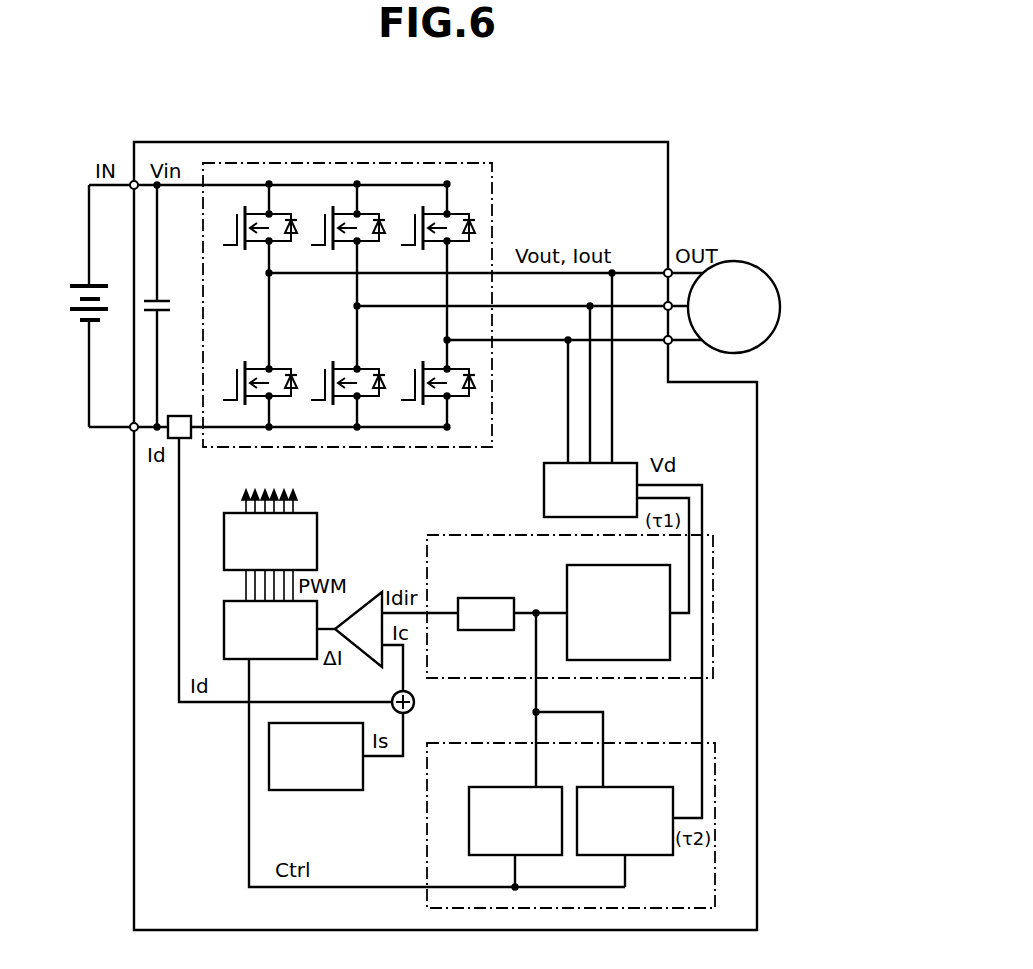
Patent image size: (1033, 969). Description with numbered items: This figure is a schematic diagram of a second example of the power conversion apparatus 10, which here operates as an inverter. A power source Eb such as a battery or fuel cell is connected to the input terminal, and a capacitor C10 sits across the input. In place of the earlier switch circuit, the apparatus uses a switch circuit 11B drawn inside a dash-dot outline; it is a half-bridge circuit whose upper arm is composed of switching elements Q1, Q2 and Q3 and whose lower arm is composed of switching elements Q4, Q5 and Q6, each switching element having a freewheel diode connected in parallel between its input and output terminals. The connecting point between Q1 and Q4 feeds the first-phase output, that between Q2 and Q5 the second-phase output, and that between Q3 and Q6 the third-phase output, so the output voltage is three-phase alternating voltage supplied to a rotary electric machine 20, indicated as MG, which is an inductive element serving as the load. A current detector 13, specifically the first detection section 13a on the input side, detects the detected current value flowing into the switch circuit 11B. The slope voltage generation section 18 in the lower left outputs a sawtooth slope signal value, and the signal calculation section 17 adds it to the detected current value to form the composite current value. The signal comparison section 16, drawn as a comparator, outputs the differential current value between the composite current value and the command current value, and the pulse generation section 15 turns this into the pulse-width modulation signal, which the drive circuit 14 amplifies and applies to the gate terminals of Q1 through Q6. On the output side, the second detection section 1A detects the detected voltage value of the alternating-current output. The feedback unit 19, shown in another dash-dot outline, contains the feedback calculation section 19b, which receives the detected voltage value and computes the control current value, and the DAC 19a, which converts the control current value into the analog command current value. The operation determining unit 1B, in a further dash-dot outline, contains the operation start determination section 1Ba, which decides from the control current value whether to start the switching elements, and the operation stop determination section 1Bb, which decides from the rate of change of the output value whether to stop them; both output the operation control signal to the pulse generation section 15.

The power conversion apparatus 10 is at (370, 142).
The switch circuit 11B is at (394, 305).
The current detector 13 is at (179, 394).
The first detection section 13a is at (180, 416).
The drive circuit 14 is at (224, 537).
The pulse generation section 15 is at (224, 635).
The slope voltage generation section 16 is at (357, 610).
The signal calculation section 17 is at (393, 694).
The signal comparison section 18 is at (327, 790).
The feedback unit 19 is at (547, 578).
The DAC 19a is at (487, 598).
The feedback calculation section 19b is at (598, 566).
The second detection section 1A is at (544, 490).
The operation determining unit 1B is at (571, 800).
The operation start determination section 1Ba is at (512, 787).
The operation stop determination section 1Bb is at (622, 787).
The rotary electric machine 20 is at (760, 273).
The power source Eb is at (80, 288).
The capacitor C10 is at (170, 306).
The switching element Q1 is at (252, 218).
The switching element Q2 is at (340, 218).
The switching element Q3 is at (430, 218).
The switching element Q4 is at (252, 373).
The switching element Q5 is at (340, 373).
The switching element Q6 is at (430, 373).